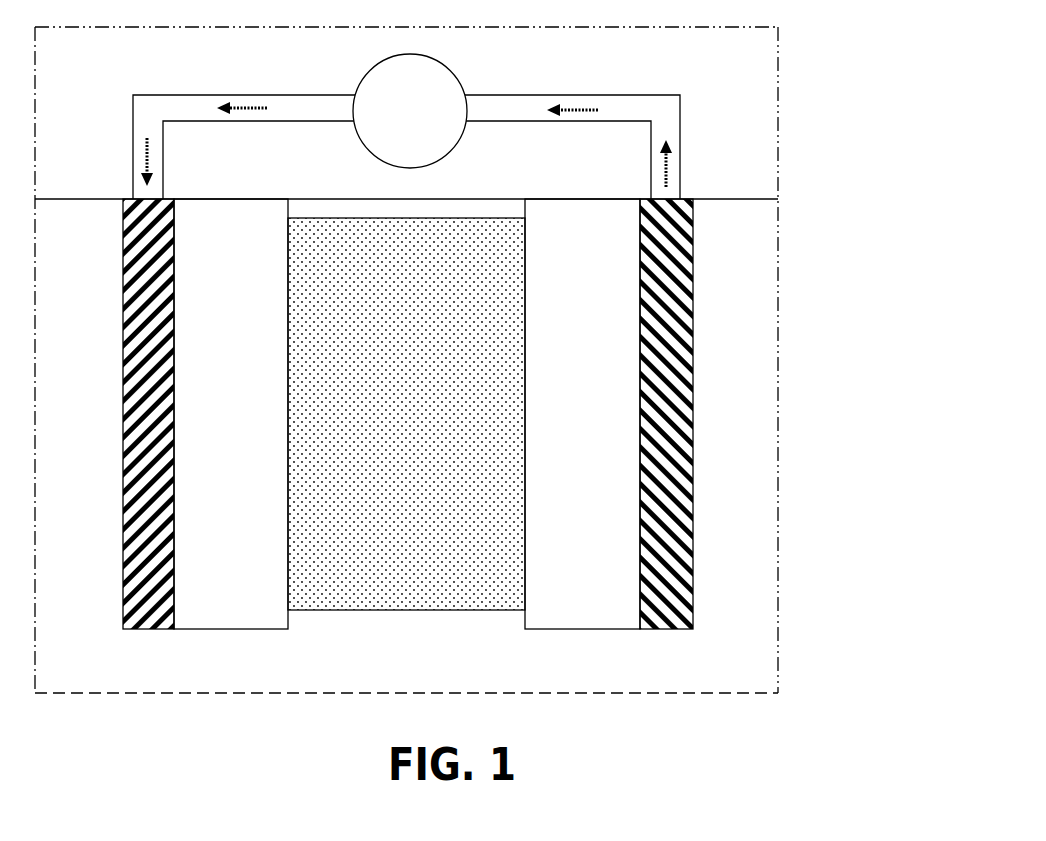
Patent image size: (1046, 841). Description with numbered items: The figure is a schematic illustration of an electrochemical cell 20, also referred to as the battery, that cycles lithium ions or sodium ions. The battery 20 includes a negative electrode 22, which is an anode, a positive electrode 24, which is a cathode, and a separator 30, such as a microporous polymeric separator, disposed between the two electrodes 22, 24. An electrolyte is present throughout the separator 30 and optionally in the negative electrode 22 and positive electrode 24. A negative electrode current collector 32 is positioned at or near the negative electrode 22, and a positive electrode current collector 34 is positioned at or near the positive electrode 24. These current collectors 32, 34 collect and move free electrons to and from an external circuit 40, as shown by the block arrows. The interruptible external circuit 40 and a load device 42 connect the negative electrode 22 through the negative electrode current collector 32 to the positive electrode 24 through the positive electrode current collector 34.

The electrochemical cell 20 is at (787, 262).
The negative electrode 22 is at (219, 378).
The positive electrode 24 is at (569, 378).
The separator 30 is at (395, 378).
The negative electrode current collector 32 is at (123, 449).
The positive electrode current collector 34 is at (693, 449).
The external circuit 40 is at (506, 126).
The load device 42 is at (397, 116).